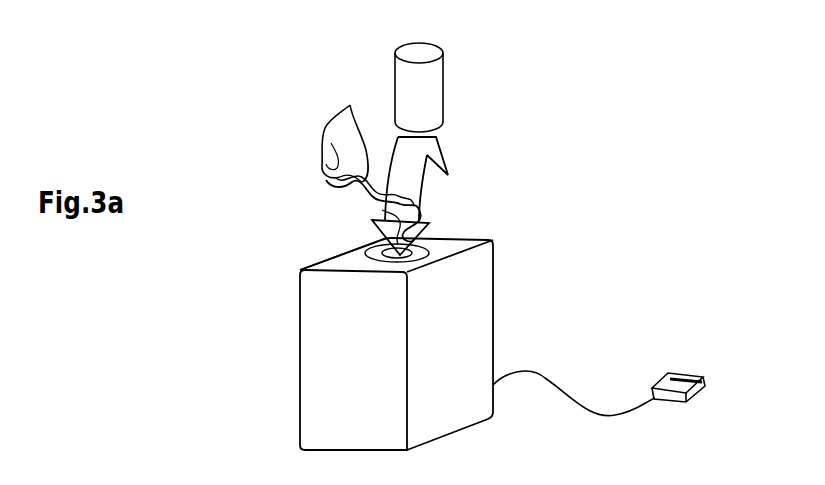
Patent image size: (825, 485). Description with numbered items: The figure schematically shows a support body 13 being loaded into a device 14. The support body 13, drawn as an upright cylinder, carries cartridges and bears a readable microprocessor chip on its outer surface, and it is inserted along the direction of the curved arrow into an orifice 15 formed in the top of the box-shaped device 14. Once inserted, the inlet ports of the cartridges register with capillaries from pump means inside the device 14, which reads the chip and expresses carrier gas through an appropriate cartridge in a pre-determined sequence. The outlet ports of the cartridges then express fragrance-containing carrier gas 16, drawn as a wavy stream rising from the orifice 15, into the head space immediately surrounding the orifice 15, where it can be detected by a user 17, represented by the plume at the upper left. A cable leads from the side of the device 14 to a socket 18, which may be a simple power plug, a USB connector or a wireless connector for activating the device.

The support body 13 is at (450, 101).
The device 14 is at (473, 293).
The orifice 15 is at (428, 243).
The fragrance-containing carrier gas 16 is at (344, 221).
The user 17 is at (308, 128).
The socket 18 is at (710, 363).